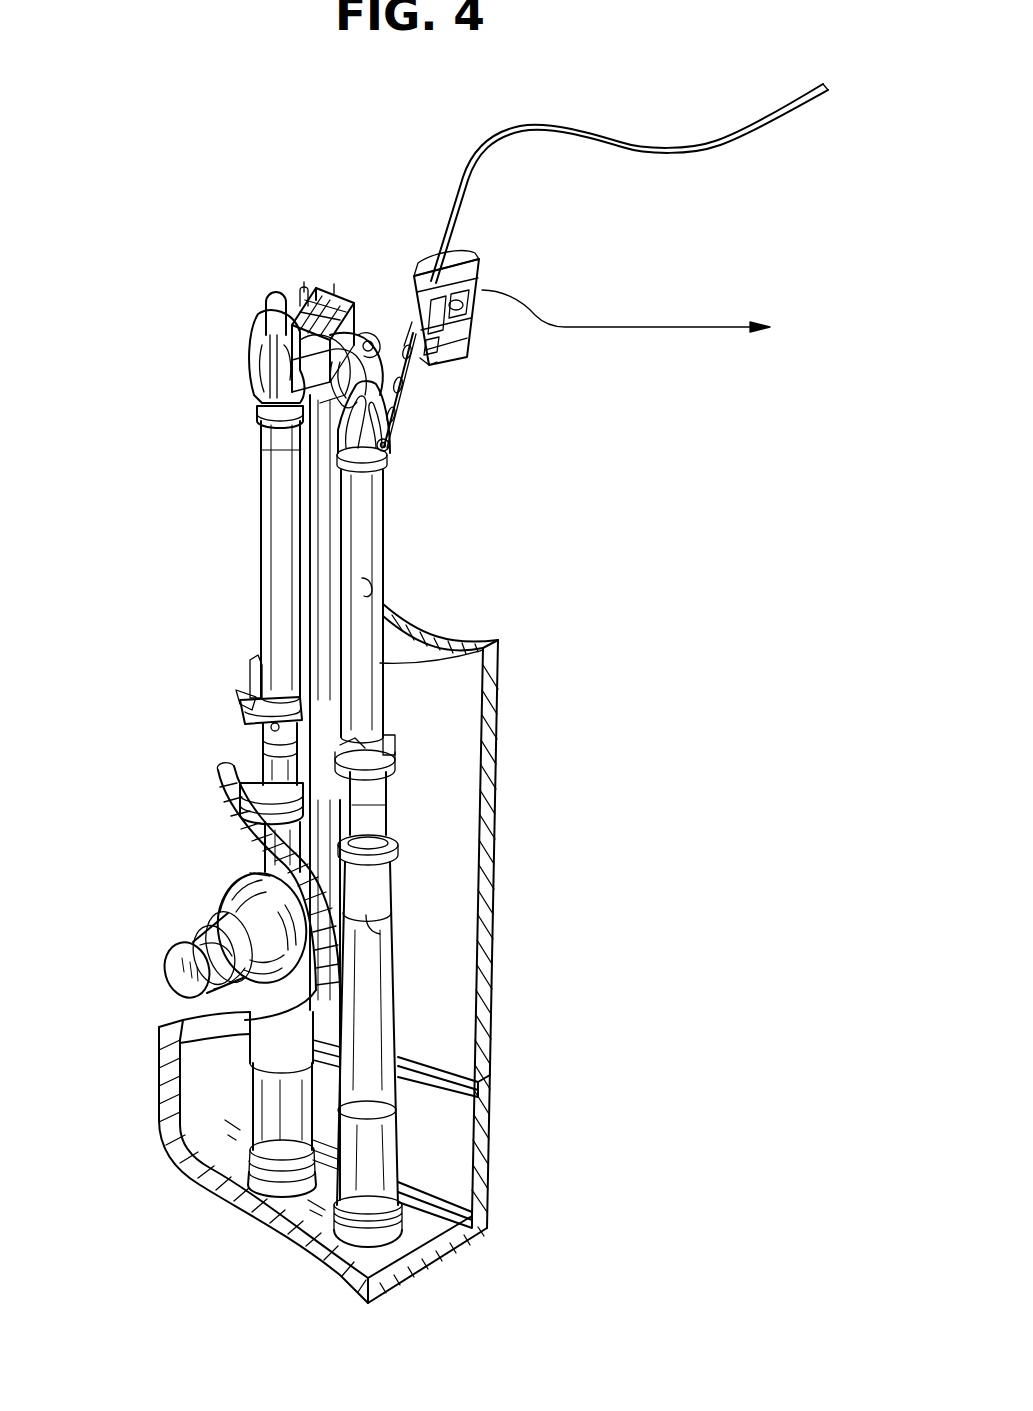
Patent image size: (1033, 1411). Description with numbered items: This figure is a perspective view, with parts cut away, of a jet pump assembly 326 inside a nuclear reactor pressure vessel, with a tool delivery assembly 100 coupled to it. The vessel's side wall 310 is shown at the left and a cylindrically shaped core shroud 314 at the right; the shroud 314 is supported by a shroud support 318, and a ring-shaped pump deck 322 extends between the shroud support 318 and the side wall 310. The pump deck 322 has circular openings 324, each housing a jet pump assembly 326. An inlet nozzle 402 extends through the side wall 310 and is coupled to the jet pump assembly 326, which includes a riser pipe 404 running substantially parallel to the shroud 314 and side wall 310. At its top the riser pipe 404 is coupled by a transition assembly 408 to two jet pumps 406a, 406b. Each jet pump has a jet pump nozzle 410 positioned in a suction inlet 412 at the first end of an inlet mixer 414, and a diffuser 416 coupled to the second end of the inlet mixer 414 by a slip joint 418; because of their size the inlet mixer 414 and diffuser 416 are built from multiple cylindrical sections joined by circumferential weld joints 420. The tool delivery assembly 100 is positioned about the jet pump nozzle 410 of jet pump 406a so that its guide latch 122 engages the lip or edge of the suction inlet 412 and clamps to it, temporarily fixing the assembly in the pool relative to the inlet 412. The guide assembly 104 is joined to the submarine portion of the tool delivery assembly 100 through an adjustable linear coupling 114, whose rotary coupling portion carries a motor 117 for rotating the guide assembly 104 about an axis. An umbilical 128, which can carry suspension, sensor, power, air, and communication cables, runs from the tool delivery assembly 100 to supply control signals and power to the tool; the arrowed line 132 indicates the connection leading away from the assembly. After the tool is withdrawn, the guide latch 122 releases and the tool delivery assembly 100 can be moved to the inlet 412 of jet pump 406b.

The tool delivery assembly 100 is at (481, 277).
The guide assembly 104 is at (398, 410).
The linear coupling 114 is at (425, 362).
The motor 117 is at (403, 362).
The guide latch 122 is at (387, 443).
The umbilical 128 is at (688, 150).
The signal output 132 is at (688, 327).
The side wall 310 is at (226, 790).
The core shroud 314 is at (488, 678).
The shroud support 318 is at (483, 1160).
The pump deck 322 is at (422, 1232).
The circular opening 324 is at (388, 1247).
The jet pump assembly 326 is at (256, 308).
The inlet nozzle 402 is at (190, 916).
The riser pipe 404 is at (323, 540).
The jet pump 406a is at (392, 537).
The jet pump 406b is at (250, 521).
The transition assembly 408 is at (337, 294).
The jet pump nozzle 410 is at (252, 398).
The suction inlet 412 is at (252, 408).
The inlet mixer 414 is at (384, 500).
The diffuser 416 is at (398, 1030).
The slip joint 418 is at (420, 847).
The circumferential weld joints 420 is at (263, 450).